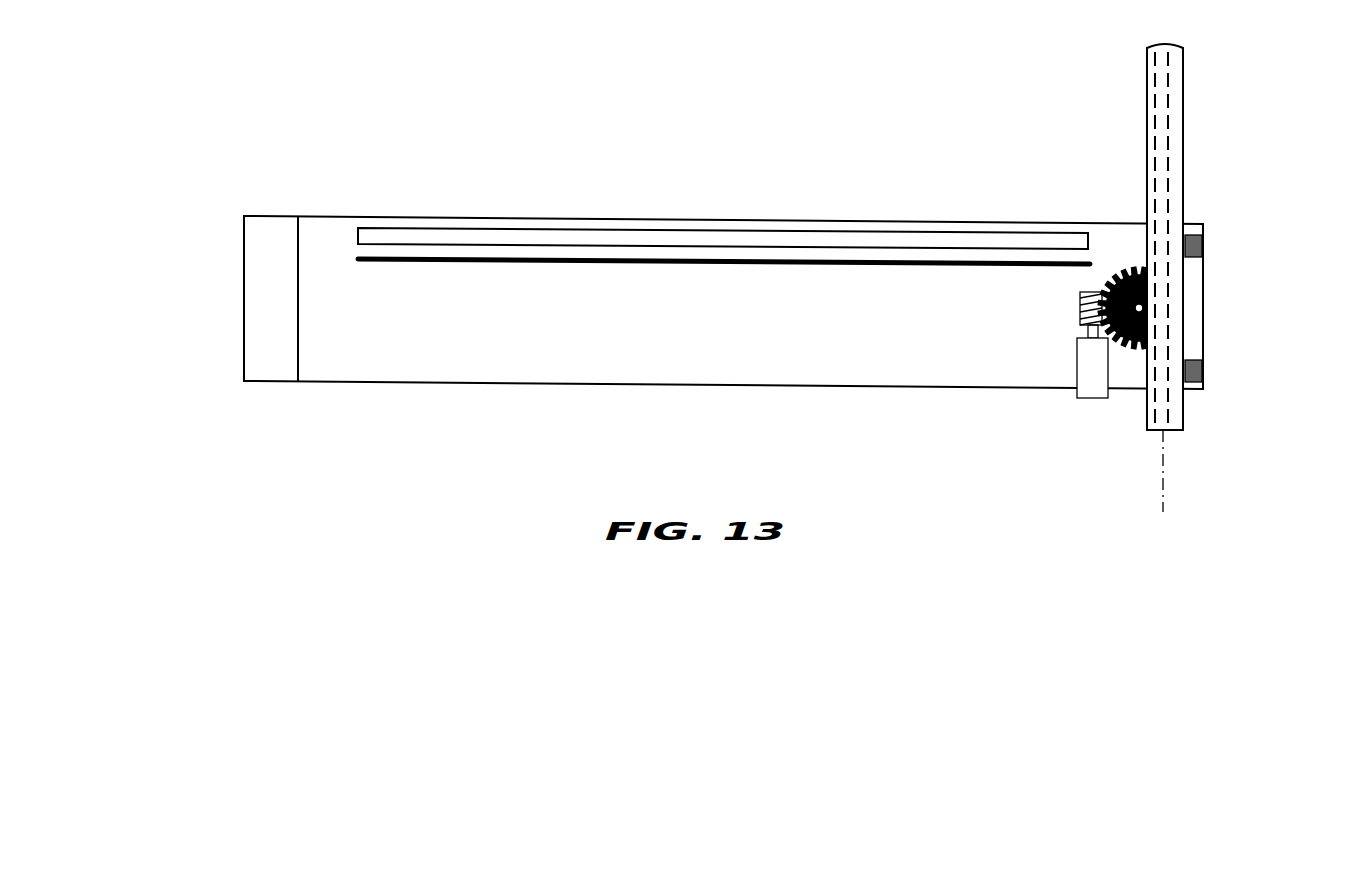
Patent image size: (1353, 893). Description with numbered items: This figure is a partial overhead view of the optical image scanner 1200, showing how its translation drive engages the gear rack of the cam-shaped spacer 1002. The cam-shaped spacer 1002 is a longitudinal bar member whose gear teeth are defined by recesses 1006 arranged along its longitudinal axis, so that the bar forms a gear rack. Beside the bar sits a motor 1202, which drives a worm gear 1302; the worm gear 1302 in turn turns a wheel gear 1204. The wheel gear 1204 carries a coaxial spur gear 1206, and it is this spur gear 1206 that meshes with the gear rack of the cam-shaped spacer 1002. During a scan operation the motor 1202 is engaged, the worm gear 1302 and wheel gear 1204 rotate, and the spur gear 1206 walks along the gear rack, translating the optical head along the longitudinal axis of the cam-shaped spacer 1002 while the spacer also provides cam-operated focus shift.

The optical image scanner 1200 is at (640, 309).
The cam-shaped spacer 1002 is at (1199, 278).
The recesses 1006 is at (1153, 73).
The motor 1202 is at (1092, 400).
The wheel gear 1204 is at (1117, 270).
The spur gear 1206 is at (1136, 292).
The worm gear 1302 is at (1045, 307).